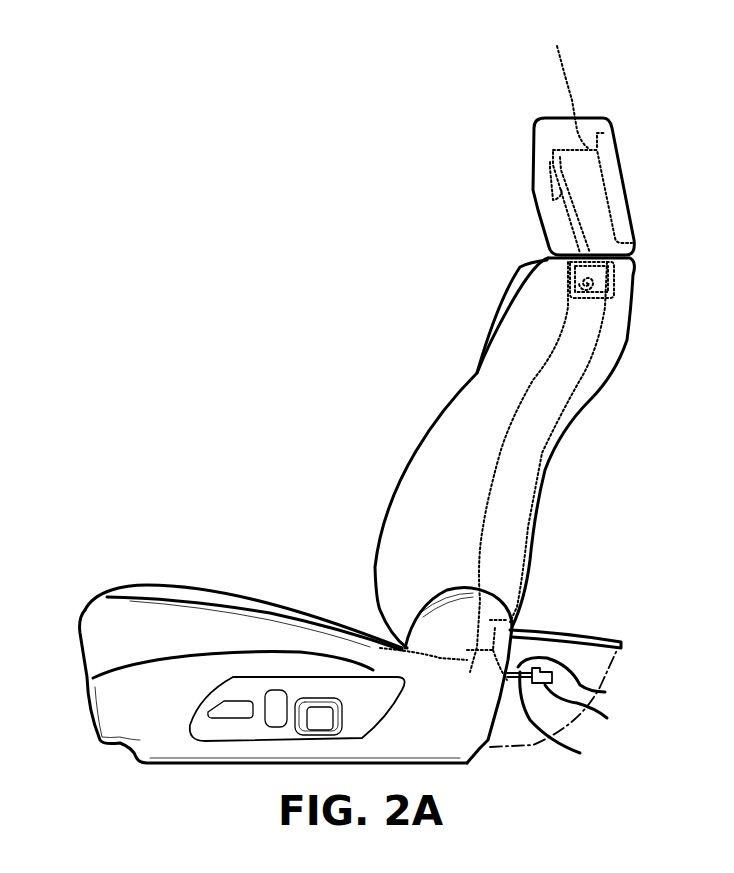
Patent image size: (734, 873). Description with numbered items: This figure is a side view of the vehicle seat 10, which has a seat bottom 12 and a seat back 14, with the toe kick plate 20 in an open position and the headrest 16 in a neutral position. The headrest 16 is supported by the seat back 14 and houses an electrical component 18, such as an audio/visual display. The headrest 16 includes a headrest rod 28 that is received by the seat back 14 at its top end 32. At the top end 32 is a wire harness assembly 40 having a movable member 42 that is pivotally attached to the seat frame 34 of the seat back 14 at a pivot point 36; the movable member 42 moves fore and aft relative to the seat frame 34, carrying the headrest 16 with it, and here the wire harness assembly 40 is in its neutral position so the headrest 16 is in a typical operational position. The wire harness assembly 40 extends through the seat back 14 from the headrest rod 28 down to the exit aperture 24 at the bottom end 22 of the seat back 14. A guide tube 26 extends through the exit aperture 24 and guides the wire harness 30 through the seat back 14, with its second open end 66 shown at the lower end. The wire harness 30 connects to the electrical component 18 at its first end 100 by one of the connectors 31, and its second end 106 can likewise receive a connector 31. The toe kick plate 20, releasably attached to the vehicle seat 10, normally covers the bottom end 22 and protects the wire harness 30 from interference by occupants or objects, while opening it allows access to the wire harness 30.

The vehicle seat 10 is at (302, 393).
The seat bottom 12 is at (212, 587).
The seat back 14 is at (633, 258).
The headrest 16 is at (590, 127).
The electrical component 18 is at (612, 163).
The toe kick plate 20 is at (580, 628).
The bottom end 22 is at (430, 657).
The exit aperture 24 is at (468, 665).
The guide tube 26 is at (490, 620).
The headrest rod 28 is at (553, 200).
The wire harness 30 is at (563, 150).
The connectors 31 is at (588, 710).
The top end 32 is at (543, 260).
The seat frame 34 is at (543, 500).
The pivot point 36 is at (633, 287).
The wire harness assembly 40 is at (627, 275).
The movable member 42 is at (587, 283).
The second open end 66 is at (490, 648).
The first end 100 is at (567, 86).
The second end 106 is at (579, 680).